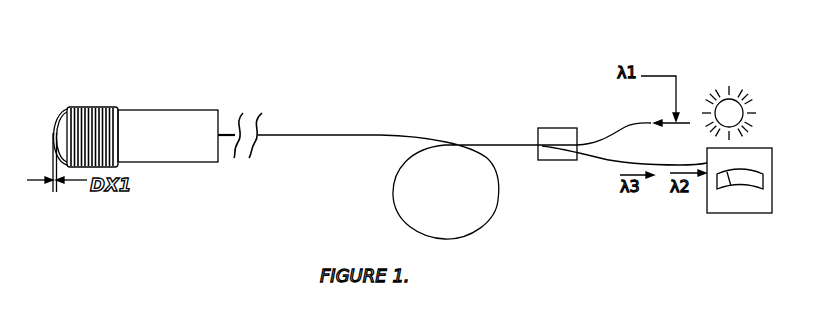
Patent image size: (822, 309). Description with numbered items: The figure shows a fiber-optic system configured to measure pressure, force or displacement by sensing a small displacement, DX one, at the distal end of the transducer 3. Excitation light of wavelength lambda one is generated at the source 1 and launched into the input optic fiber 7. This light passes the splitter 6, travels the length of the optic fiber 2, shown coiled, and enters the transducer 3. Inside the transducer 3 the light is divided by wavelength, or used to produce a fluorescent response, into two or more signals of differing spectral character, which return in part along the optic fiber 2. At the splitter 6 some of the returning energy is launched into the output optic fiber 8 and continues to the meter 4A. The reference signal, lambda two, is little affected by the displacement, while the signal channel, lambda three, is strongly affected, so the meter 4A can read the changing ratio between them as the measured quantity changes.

The source 1 is at (728, 95).
The optic fiber 2 is at (397, 149).
The transducer 3 is at (136, 95).
The meter 4A is at (739, 214).
The splitter 6 is at (543, 109).
The input optic fiber 7 is at (589, 79).
The output optic fiber 8 is at (624, 164).